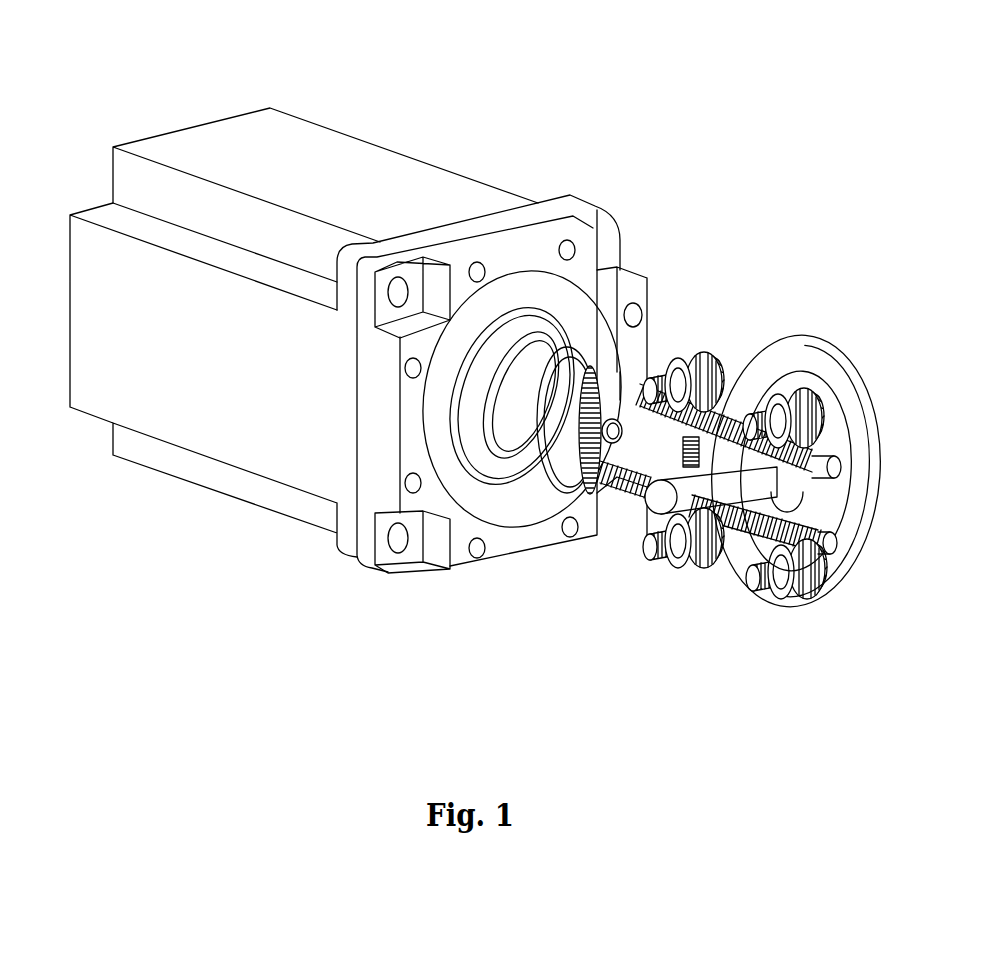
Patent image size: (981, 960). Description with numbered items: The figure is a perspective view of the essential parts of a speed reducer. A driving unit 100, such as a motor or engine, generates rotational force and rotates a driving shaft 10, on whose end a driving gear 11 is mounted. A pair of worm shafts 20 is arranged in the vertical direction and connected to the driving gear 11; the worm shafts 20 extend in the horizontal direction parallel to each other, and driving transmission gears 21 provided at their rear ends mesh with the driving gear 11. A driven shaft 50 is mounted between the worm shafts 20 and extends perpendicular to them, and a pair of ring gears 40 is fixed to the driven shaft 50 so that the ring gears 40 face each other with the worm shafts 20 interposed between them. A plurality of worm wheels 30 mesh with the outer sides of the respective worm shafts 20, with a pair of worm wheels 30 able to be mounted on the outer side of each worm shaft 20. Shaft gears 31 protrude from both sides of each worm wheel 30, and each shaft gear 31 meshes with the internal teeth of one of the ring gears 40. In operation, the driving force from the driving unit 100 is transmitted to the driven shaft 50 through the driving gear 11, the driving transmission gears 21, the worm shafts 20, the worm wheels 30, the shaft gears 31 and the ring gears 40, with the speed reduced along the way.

The driving unit 100 is at (297, 127).
The driving shaft 10 is at (596, 500).
The driving gear 11 is at (583, 437).
The driving transmission gear 21 is at (604, 355).
The shaft gear 31 is at (738, 340).
The worm wheel 30 is at (820, 360).
The ring gear 40 is at (778, 333).
The worm shaft 20 is at (846, 410).
The driven shaft 50 is at (658, 498).